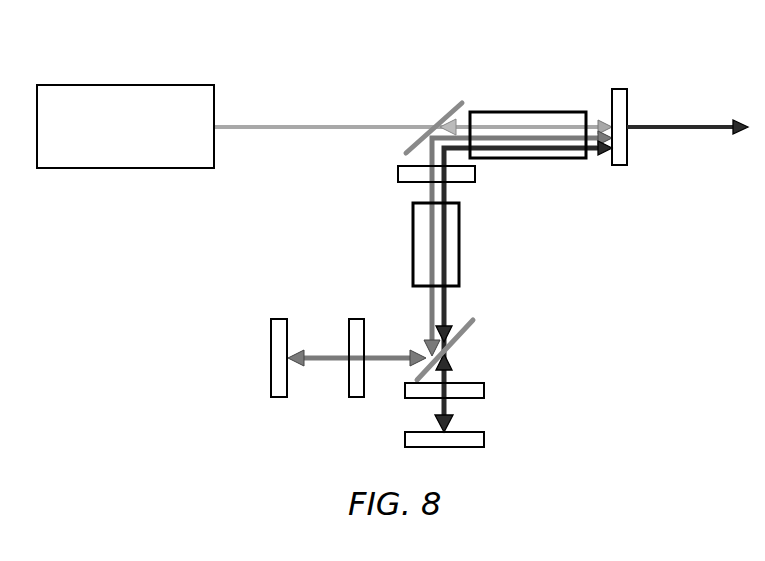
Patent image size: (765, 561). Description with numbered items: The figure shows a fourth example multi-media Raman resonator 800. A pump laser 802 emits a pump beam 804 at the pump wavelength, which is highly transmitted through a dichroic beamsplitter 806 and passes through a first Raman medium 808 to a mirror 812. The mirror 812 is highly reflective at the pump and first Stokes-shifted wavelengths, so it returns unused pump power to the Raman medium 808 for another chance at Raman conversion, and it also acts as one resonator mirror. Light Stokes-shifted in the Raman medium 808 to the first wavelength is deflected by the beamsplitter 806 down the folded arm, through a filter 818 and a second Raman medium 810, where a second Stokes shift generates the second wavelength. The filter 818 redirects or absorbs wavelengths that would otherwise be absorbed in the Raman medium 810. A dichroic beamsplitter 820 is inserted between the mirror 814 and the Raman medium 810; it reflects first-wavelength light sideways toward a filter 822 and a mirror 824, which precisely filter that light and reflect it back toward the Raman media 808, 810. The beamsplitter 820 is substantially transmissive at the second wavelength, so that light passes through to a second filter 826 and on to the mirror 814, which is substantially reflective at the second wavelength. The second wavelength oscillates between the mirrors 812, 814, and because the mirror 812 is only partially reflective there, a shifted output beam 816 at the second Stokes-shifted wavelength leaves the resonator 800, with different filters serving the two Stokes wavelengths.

The multi-media Raman resonator 800 is at (166, 46).
The pump laser 802 is at (167, 168).
The pump beam 804 is at (310, 129).
The dichroic beamsplitter 806 is at (448, 106).
The Raman medium 808 is at (543, 112).
The Raman medium 810 is at (413, 242).
The mirror 812 is at (618, 89).
The mirror 814 is at (484, 441).
The shifted output beam 816 is at (712, 132).
The filter 818 is at (398, 174).
The dichroic beamsplitter 820 is at (463, 333).
The filter 822 is at (349, 394).
The mirror 824 is at (271, 375).
The second filter 826 is at (484, 390).